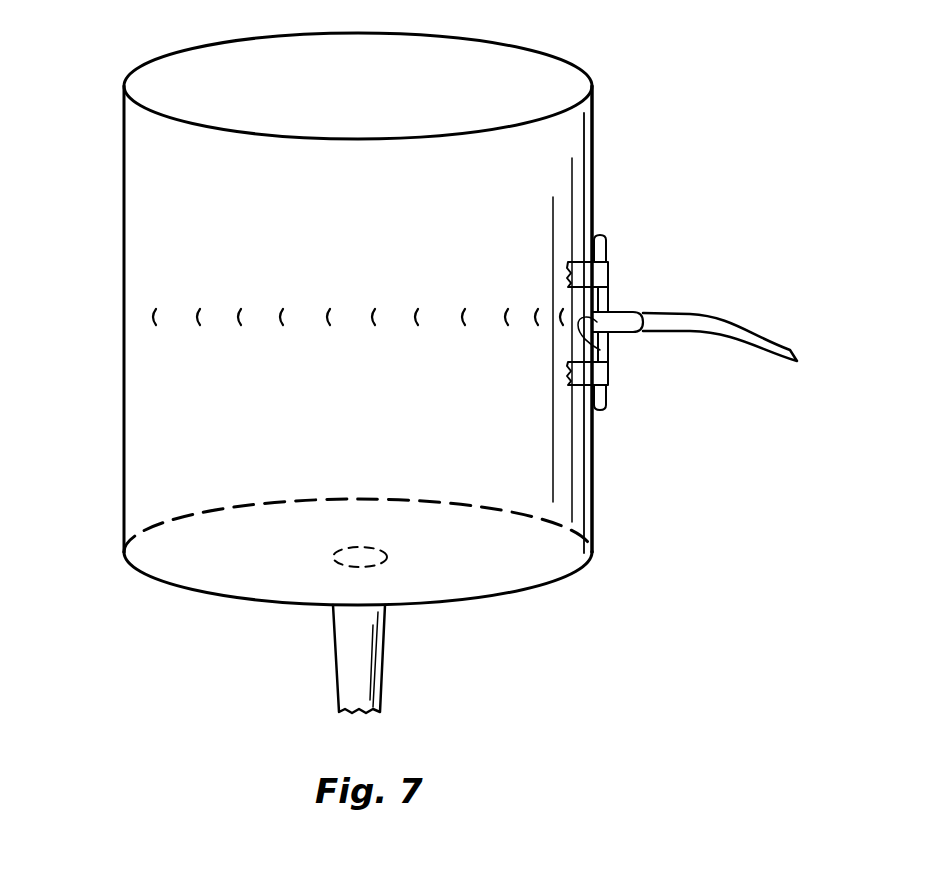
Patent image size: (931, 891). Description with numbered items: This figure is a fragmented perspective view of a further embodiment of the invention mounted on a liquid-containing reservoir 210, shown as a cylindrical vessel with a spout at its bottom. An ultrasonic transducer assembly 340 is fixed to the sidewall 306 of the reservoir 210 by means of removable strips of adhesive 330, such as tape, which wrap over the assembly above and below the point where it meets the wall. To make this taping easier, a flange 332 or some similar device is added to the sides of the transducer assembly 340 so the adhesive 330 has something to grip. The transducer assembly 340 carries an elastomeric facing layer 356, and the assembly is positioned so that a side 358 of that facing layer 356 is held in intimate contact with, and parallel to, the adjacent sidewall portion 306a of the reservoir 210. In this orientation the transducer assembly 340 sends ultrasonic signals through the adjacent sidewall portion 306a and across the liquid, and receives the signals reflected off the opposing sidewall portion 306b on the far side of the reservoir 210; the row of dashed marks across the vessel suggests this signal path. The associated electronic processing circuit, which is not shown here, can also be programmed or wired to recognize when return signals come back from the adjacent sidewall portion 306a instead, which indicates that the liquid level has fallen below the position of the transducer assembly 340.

The reservoir container 210 is at (119, 114).
The sidewall 306 is at (594, 143).
The sidewall portion 306a is at (584, 478).
The opposing sidewall portion 306b is at (124, 350).
The removable strips of adhesive 330 is at (600, 277).
The flange 332 is at (603, 400).
The ultrasonic transducer assembly 340 is at (640, 315).
The elastomeric facing layer 356 is at (608, 316).
The side of the elastomeric facing layer 358 is at (600, 350).